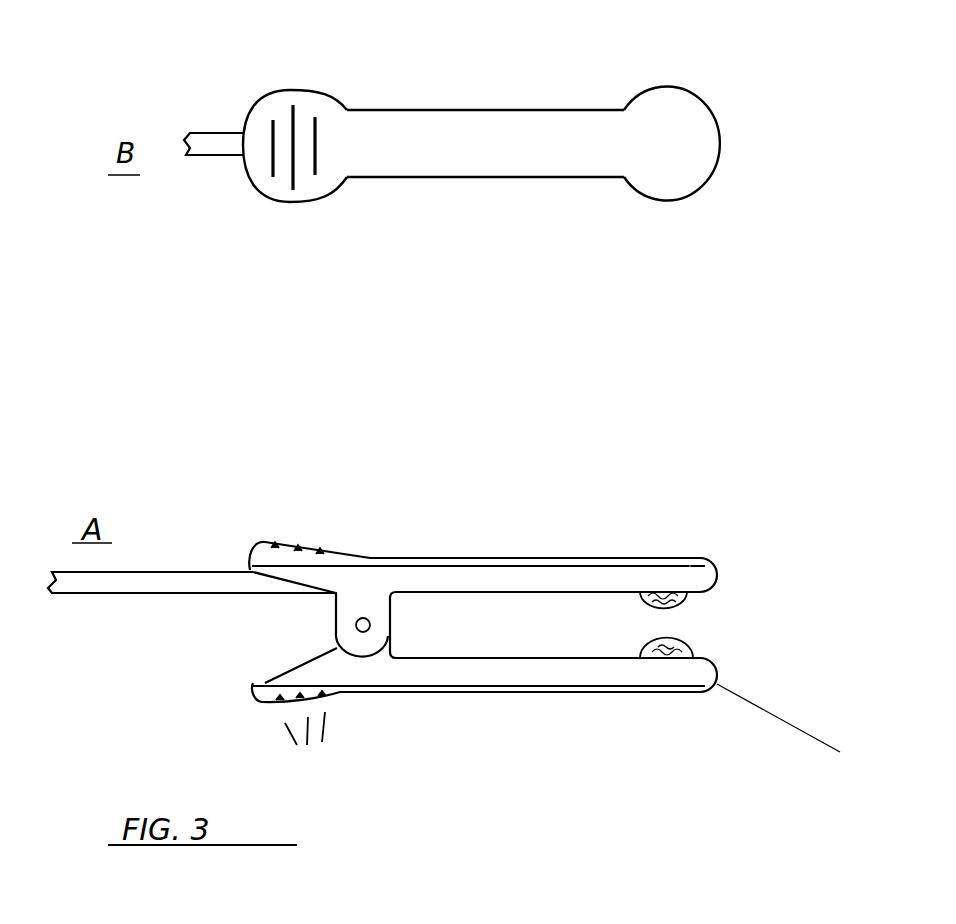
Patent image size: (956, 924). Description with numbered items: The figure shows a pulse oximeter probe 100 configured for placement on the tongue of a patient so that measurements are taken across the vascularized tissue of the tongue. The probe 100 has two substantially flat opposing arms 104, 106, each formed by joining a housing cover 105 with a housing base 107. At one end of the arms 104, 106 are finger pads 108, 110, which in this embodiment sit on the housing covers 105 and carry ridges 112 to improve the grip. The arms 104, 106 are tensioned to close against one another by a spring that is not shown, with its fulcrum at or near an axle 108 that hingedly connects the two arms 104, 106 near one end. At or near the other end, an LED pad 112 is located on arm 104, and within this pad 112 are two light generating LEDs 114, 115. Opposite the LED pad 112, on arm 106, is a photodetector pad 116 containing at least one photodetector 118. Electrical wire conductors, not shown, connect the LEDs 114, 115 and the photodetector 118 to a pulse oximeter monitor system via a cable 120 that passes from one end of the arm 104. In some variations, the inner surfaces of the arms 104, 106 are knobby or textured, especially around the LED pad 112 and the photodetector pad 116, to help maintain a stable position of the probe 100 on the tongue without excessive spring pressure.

The pulse oximeter probe 100 is at (240, 224).
The arm 104 is at (543, 578).
The housing cover 105 is at (403, 148).
The arm 106 is at (525, 673).
The housing base 107 is at (608, 580).
The finger pad 108 is at (262, 530).
The finger pad 110 is at (275, 724).
The ridges 112 is at (315, 135).
The LED 114 is at (653, 600).
The LED 115 is at (660, 609).
The photodetector pad 116 is at (687, 645).
The photodetector 118 is at (673, 655).
The cable 120 is at (200, 133).